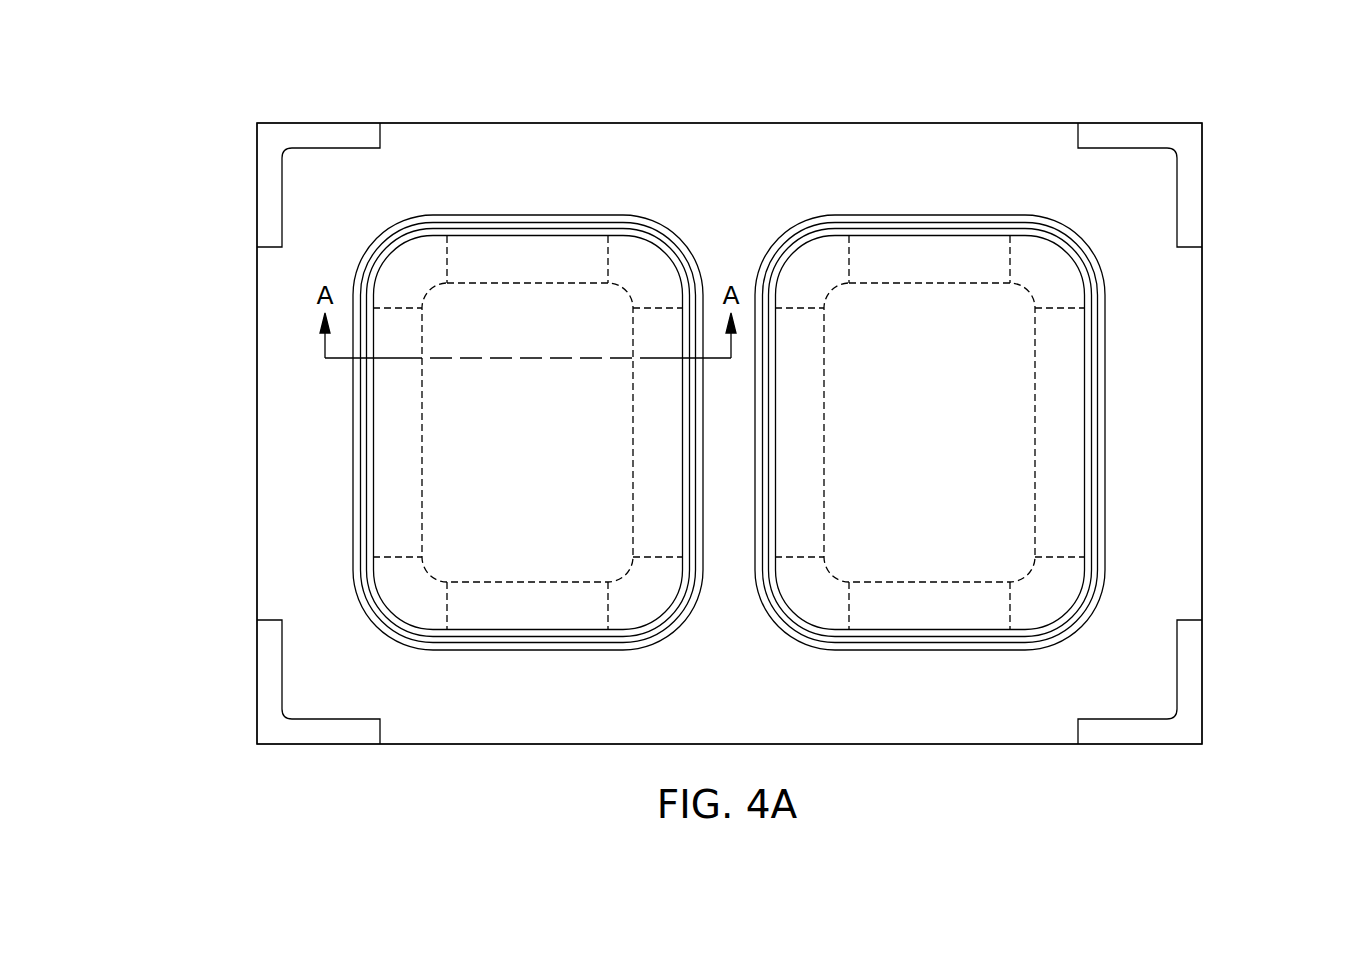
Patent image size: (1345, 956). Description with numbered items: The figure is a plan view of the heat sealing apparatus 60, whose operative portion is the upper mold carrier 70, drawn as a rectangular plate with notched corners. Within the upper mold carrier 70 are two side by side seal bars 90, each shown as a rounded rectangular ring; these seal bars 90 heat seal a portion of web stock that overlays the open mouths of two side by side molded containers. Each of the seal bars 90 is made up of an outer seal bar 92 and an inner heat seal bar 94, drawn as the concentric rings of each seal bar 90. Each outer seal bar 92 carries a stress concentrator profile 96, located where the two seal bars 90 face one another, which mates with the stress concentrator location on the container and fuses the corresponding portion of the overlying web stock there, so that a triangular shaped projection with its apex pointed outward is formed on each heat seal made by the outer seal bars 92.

The heat sealing apparatus 60 is at (198, 425).
The upper mold carrier 70 is at (1204, 425).
The seal bars 90 is at (729, 374).
The outer seal bar 92 is at (676, 622).
The inner heat seal bar 94 is at (688, 480).
The stress concentrator profile 96 is at (683, 237).